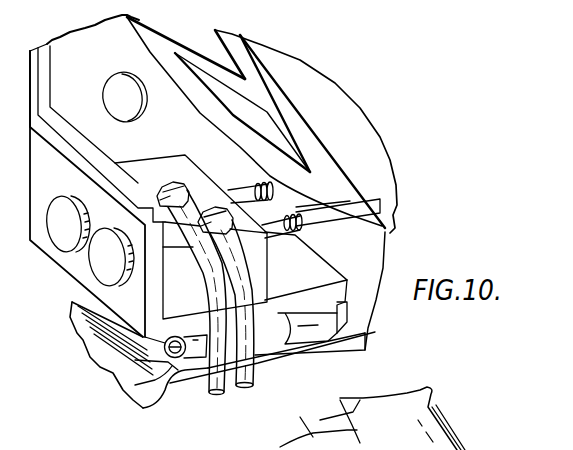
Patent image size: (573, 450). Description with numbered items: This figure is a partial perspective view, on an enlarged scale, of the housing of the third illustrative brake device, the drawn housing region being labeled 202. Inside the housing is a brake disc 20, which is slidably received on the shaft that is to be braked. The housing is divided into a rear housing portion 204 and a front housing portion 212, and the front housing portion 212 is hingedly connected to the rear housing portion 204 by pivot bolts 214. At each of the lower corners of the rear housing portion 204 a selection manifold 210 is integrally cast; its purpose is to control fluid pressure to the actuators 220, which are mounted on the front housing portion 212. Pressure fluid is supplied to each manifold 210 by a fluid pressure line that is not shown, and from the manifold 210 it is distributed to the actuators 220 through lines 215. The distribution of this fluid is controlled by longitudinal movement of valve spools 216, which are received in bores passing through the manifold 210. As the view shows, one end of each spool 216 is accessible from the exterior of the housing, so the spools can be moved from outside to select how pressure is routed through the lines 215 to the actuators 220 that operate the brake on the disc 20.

The brake disc 20 is at (326, 113).
The housing 202 is at (70, 127).
The rear housing portion 204 is at (98, 42).
The selection manifold 210 is at (166, 175).
The front housing portion 212 is at (130, 395).
The pivot bolt 214 is at (160, 350).
The line 215 is at (237, 388).
The valve spool 216 is at (100, 258).
The actuator 220 is at (343, 418).